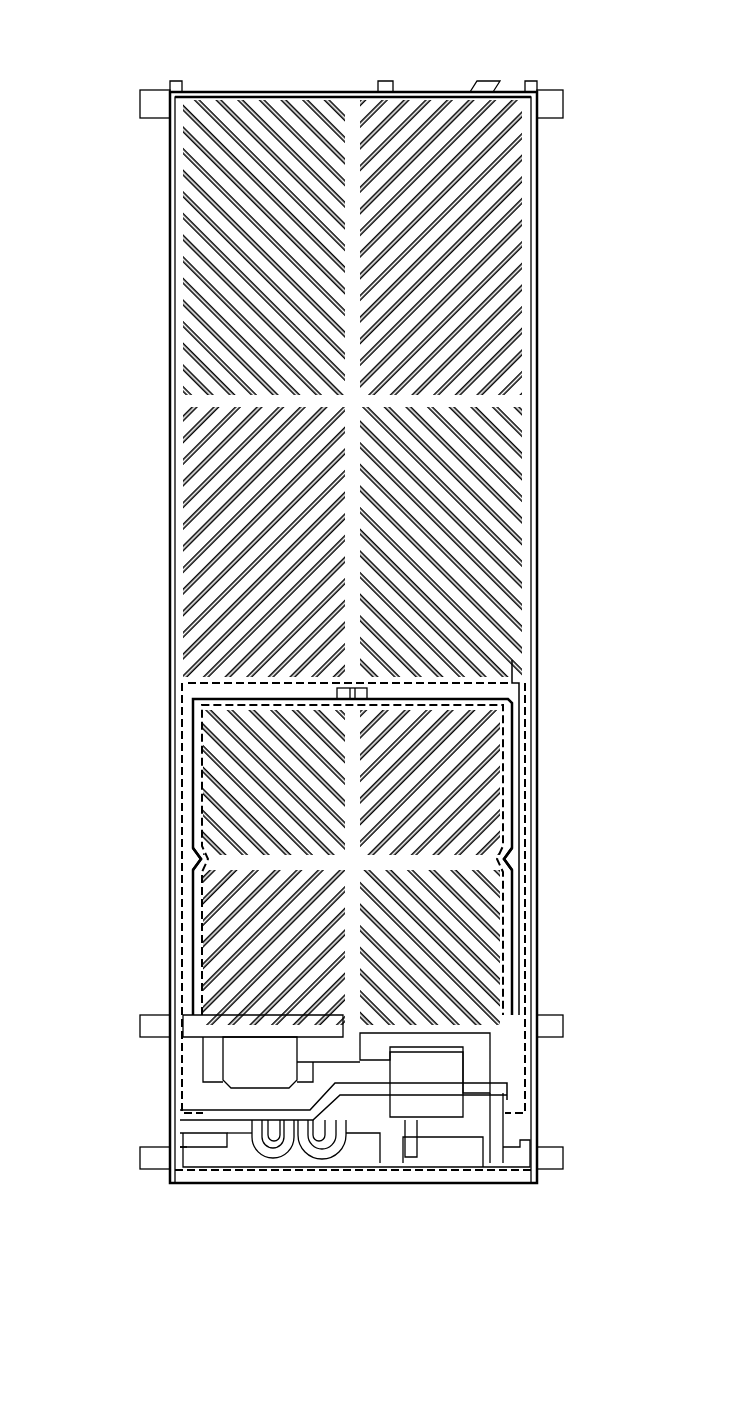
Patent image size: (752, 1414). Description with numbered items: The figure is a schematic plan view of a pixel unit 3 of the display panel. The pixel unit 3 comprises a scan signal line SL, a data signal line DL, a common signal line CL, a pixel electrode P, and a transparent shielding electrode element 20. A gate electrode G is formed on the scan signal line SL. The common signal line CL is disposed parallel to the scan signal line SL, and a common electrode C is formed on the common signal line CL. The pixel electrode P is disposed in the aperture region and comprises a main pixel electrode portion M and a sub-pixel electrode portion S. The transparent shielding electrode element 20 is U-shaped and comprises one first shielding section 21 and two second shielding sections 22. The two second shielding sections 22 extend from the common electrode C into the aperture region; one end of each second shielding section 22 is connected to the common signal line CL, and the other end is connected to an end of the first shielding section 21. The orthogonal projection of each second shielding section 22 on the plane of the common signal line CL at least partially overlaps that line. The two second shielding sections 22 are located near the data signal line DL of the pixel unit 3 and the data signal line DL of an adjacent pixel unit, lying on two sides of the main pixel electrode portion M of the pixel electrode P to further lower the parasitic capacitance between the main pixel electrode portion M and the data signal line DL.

The pixel unit 3 is at (90, 66).
The pixel electrode P is at (172, 454).
The data signal line DL is at (173, 577).
The sub-pixel electrode portion S is at (525, 178).
The first shielding section 21 is at (443, 688).
The transparent shielding electrode element 20 is at (531, 922).
The main pixel electrode portion M is at (497, 770).
The second shielding sections 22 is at (190, 862).
The common signal line CL is at (200, 1040).
The common electrode C is at (222, 1040).
The gate electrode G is at (262, 1152).
The scan signal line SL is at (185, 1165).